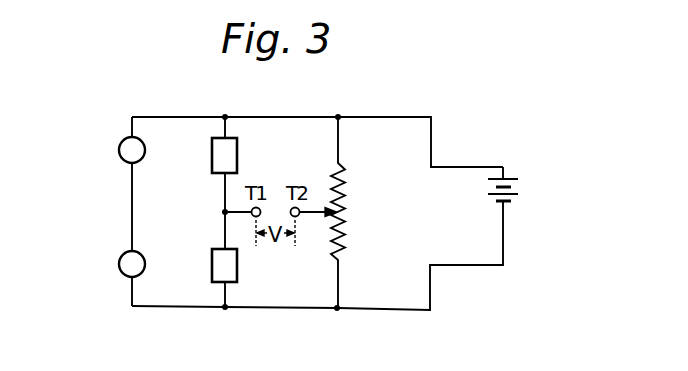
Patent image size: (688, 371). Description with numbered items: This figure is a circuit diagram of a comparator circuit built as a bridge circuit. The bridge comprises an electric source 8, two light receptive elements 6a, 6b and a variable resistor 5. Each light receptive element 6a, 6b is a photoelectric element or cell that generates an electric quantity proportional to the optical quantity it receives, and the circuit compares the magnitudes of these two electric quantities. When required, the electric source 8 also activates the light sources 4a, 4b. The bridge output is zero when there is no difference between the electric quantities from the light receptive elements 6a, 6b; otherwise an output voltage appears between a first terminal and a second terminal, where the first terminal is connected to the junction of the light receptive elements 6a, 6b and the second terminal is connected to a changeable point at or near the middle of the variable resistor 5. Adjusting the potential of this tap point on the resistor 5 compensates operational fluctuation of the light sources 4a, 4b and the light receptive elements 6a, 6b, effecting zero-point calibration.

The light source 4a is at (119, 152).
The light source 4b is at (119, 266).
The light receptive element 6a is at (237, 156).
The light receptive element 6b is at (237, 278).
The variable resistor 5 is at (346, 200).
The electric source 8 is at (489, 184).